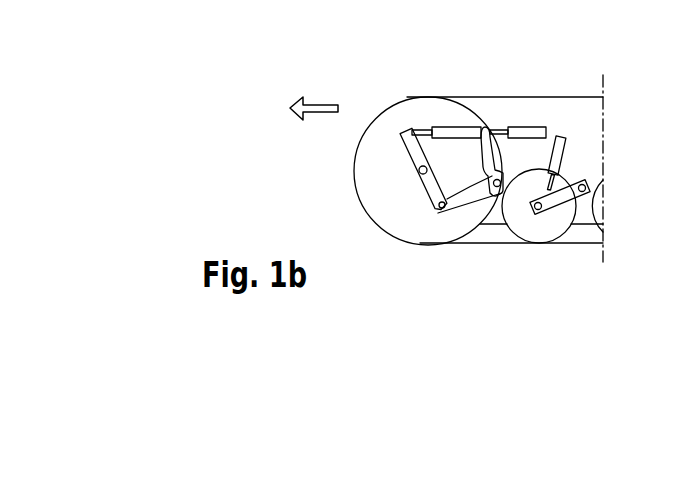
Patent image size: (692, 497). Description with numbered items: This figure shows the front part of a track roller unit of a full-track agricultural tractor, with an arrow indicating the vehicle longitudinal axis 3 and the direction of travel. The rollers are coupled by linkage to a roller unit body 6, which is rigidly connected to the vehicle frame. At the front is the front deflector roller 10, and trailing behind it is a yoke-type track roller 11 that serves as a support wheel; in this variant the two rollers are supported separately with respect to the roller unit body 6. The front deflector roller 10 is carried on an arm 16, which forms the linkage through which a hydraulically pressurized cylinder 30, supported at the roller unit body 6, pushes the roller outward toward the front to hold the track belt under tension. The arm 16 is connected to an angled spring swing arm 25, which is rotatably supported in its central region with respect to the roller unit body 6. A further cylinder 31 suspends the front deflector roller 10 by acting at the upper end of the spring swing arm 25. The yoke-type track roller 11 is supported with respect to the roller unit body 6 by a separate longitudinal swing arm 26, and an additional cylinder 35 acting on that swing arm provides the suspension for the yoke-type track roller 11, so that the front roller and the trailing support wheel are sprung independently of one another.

The vehicle longitudinal axis 3 is at (318, 105).
The roller unit body 6 is at (582, 146).
The front deflector roller 10 is at (425, 228).
The yoke-type track roller 11 is at (540, 230).
The arm 16 is at (412, 150).
The angled spring swing arm 25 is at (469, 194).
The longitudinal swing arm 26 is at (576, 216).
The cylinder 30 is at (463, 128).
The cylinder 31 is at (527, 127).
The cylinder 35 is at (560, 138).